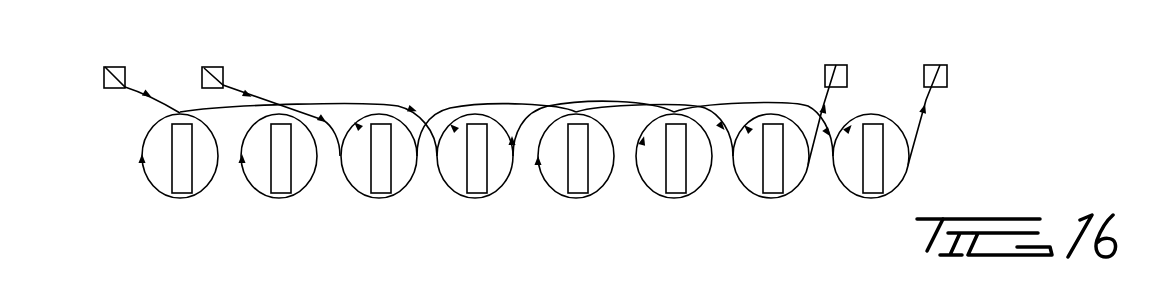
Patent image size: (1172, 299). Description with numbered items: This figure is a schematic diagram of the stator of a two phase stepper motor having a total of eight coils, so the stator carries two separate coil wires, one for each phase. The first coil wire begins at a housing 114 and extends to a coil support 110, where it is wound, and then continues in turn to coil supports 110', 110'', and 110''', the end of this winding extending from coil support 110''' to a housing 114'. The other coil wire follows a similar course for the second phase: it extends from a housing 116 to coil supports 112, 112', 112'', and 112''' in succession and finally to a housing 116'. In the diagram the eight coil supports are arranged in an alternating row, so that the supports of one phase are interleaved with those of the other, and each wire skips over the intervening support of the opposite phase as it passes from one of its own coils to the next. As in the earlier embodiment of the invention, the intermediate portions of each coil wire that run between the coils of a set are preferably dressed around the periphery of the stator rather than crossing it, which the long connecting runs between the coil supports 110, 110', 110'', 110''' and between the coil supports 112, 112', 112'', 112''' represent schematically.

The coil support 110 is at (178, 176).
The coil support 112 is at (275, 176).
The coil support 110' is at (371, 176).
The coil support 112' is at (470, 176).
The coil support 110'' is at (568, 176).
The coil support 112'' is at (665, 176).
The coil support 110''' is at (769, 176).
The coil support 112''' is at (863, 176).
The housing 114 is at (127, 63).
The housing 116 is at (271, 85).
The housing 114' is at (824, 89).
The housing 116' is at (951, 89).